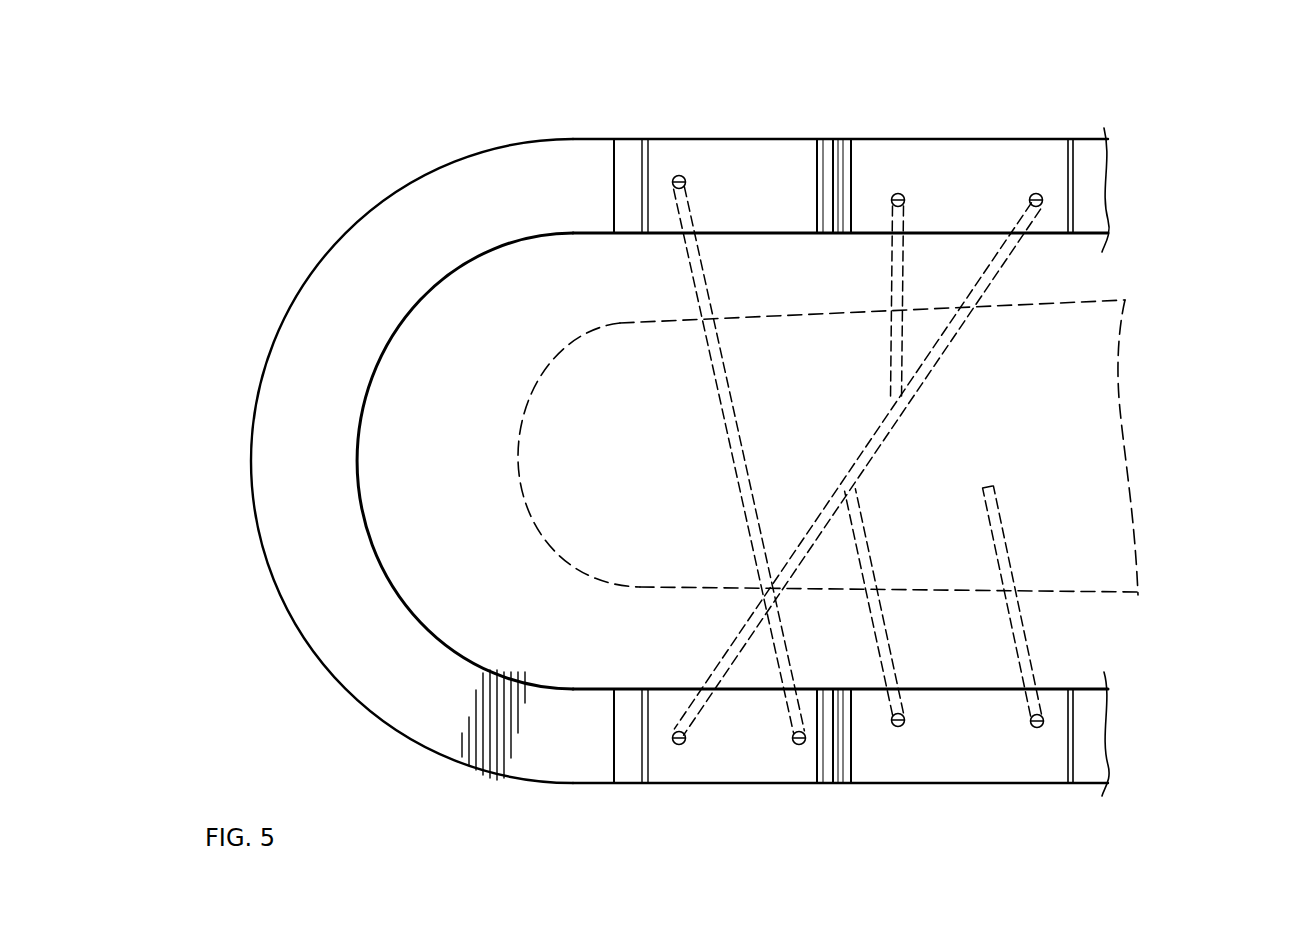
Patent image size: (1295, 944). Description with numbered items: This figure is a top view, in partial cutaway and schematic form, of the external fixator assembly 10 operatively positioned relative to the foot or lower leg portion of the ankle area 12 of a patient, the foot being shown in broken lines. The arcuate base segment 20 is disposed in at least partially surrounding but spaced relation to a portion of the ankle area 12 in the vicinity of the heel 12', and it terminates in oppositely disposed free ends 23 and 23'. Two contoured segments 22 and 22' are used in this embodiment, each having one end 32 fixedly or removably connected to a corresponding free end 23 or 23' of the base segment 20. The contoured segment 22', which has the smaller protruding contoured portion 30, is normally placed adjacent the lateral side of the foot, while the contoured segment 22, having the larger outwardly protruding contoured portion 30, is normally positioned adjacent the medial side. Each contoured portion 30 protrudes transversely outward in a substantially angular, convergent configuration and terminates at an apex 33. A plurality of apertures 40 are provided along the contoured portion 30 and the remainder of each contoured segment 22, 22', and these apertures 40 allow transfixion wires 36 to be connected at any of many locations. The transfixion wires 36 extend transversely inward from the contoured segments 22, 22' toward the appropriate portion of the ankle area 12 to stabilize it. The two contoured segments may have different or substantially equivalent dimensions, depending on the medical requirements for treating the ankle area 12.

The external fixator assembly 10 is at (305, 170).
The ankle area 12 is at (945, 447).
The heel 12' is at (532, 455).
The base segment 20 is at (257, 614).
The contoured segment 22 is at (1035, 782).
The contoured segment 22' is at (1038, 141).
The free end of base segment 23 is at (534, 845).
The free end of base segment 23' is at (534, 124).
The contoured portion 30 is at (770, 134).
The end of contoured segment 32 is at (590, 237).
The apex of contoured portion 33 is at (833, 139).
The transfixion wire 36 is at (700, 285).
The aperture 40 is at (676, 176).